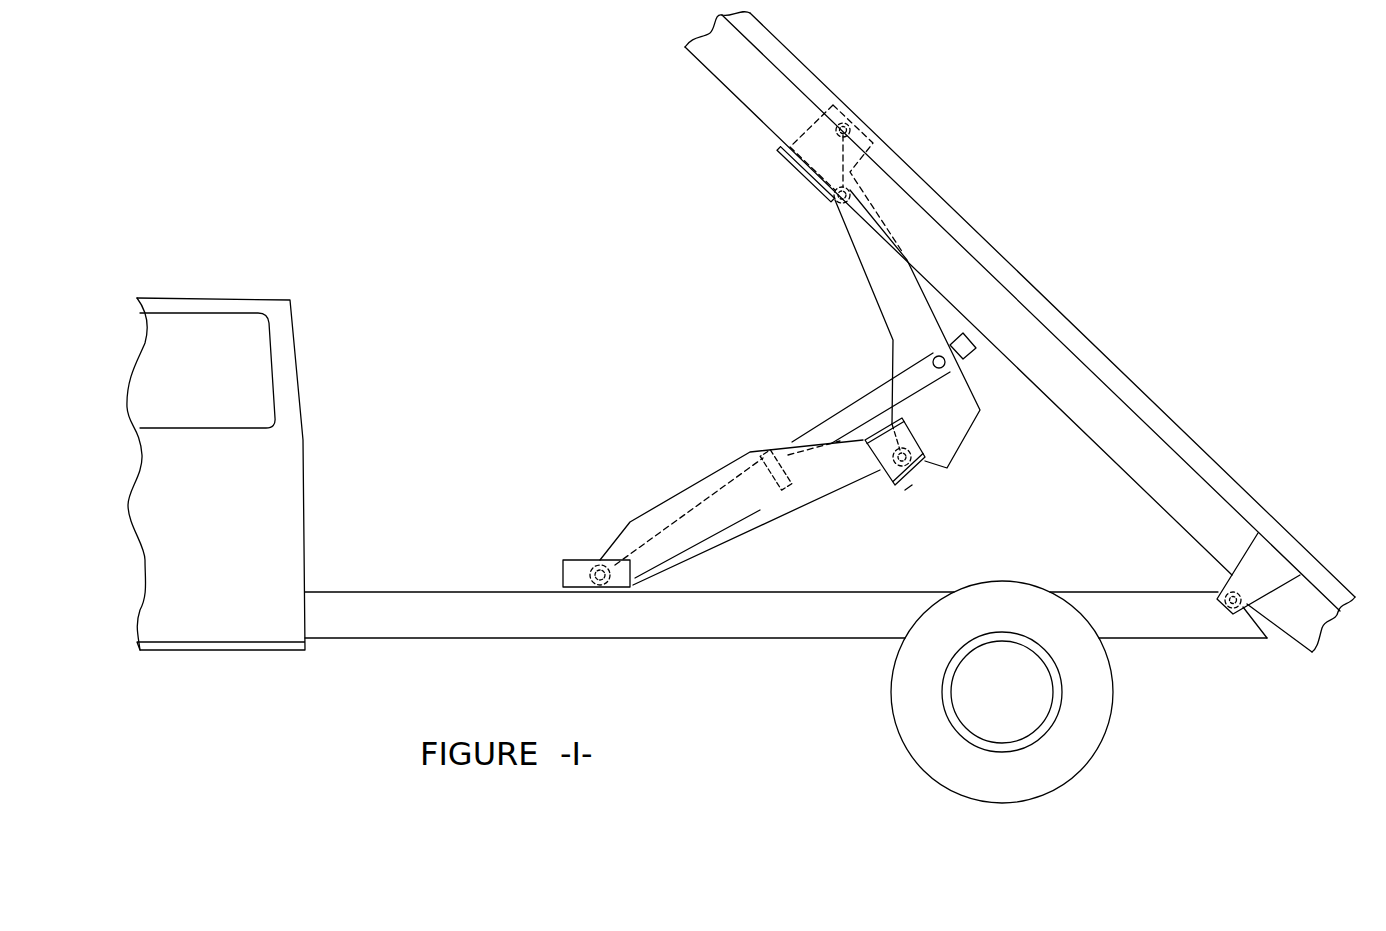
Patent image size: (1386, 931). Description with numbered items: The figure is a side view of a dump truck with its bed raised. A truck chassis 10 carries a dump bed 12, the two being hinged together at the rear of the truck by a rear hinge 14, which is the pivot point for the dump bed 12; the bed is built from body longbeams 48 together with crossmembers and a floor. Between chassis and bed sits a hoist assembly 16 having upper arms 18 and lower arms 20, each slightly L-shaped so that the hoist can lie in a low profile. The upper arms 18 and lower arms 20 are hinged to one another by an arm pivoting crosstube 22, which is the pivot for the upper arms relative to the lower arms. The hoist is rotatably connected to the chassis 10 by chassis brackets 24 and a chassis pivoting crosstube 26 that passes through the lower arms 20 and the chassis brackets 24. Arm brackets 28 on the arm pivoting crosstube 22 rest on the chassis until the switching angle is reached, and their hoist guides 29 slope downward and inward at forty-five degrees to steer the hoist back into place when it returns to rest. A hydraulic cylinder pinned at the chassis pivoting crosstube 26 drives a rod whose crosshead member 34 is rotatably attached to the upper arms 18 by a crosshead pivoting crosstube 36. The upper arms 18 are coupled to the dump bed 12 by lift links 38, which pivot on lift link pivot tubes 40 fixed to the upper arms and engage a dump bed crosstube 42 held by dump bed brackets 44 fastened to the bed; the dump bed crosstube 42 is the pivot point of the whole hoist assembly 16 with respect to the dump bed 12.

The truck chassis 10 is at (382, 600).
The dump bed 12 is at (1098, 303).
The rear hinge 14 is at (1237, 610).
The hoist assembly 16 is at (685, 380).
The upper arms 18 is at (883, 290).
The lower arms 20 is at (820, 478).
The arm pivoting crosstube 22 is at (917, 440).
The chassis brackets 24 is at (562, 572).
The chassis pivoting crosstube 26 is at (600, 560).
The arm brackets 28 is at (875, 470).
The hoist guides 29 is at (910, 490).
The crosshead member 34 is at (964, 352).
The crosshead pivoting crosstube 36 is at (933, 360).
The lift links 38 is at (860, 167).
The lift link pivot tubes 40 is at (840, 200).
The dump bed crosstube 42 is at (857, 125).
The dump bed brackets 44 is at (787, 155).
The body longbeams 48 is at (1162, 492).